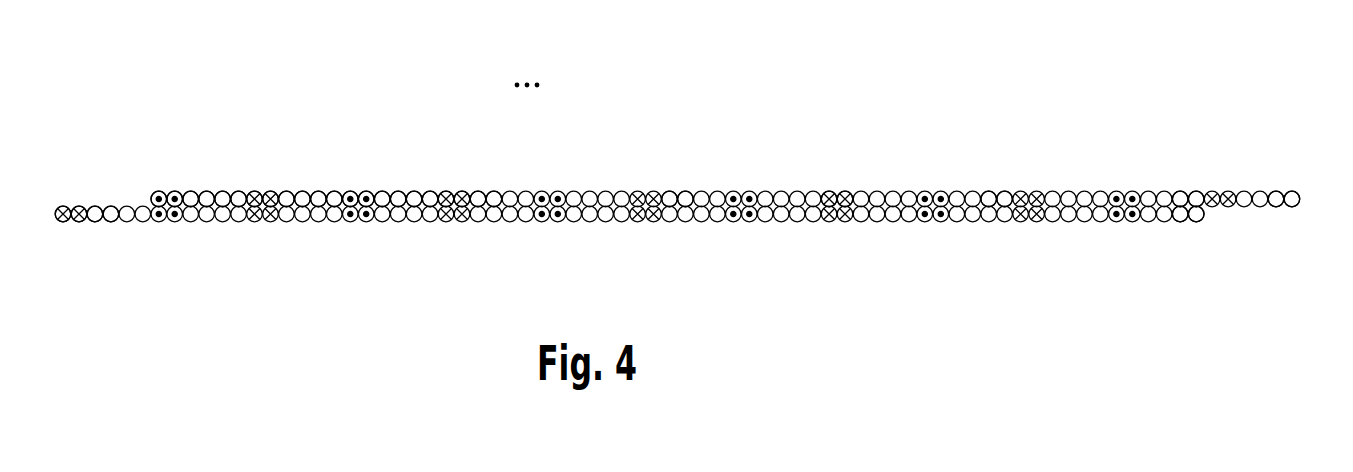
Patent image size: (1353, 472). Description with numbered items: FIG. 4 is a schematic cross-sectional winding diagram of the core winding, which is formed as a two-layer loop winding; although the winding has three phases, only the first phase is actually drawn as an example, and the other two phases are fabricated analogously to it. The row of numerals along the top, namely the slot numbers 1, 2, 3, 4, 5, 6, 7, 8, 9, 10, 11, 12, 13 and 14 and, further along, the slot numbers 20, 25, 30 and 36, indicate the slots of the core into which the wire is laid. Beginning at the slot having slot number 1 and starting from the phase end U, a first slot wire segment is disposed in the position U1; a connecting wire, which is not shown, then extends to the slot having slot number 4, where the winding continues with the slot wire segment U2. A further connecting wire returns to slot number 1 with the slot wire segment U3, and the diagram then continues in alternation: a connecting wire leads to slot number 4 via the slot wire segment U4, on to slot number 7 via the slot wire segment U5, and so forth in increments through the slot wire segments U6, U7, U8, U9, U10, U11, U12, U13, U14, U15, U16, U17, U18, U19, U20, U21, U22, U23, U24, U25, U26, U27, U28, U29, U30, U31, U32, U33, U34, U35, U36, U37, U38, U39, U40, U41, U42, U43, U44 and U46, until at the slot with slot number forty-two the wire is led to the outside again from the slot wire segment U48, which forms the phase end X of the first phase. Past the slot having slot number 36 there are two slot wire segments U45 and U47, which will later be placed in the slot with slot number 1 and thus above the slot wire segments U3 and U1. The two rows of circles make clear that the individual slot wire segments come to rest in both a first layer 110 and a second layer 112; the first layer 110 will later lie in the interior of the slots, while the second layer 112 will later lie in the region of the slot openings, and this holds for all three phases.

The slot number 3 is at (700, 146).
The first layer 110 is at (1327, 205).
The second layer 112 is at (1327, 205).
The slot number 1 is at (71, 146).
The slot number 2 is at (103, 146).
The slot number 4 is at (167, 138).
The slot number 5 is at (199, 138).
The slot number 6 is at (231, 138).
The slot number 7 is at (263, 138).
The slot number 8 is at (295, 138).
The slot number 9 is at (327, 138).
The slot number 10 is at (359, 138).
The slot number 11 is at (390, 138).
The slot number 12 is at (422, 138).
The slot number 13 is at (454, 138).
The slot number 14 is at (487, 138).
The slot number 20 is at (678, 138).
The slot number 25 is at (834, 138).
The slot number 30 is at (996, 138).
The slot number 36 is at (1188, 138).
The slot wire segment U1 is at (80, 222).
The slot wire segment U2 is at (157, 191).
The slot wire segment U3 is at (64, 222).
The slot wire segment U4 is at (173, 191).
The slot wire segment U5 is at (252, 191).
The slot wire segment U6 is at (176, 222).
The slot wire segment U7 is at (268, 191).
The slot wire segment U8 is at (160, 222).
The slot wire segment U9 is at (272, 222).
The slot wire segment U10 is at (348, 191).
The slot wire segment U11 is at (256, 222).
The slot wire segment U12 is at (364, 191).
The slot wire segment U13 is at (444, 191).
The slot wire segment U14 is at (367, 222).
The slot wire segment U15 is at (460, 191).
The slot wire segment U16 is at (351, 222).
The slot wire segment U17 is at (463, 222).
The slot wire segment U18 is at (540, 191).
The slot wire segment U19 is at (447, 222).
The slot wire segment U20 is at (556, 191).
The slot wire segment U21 is at (636, 191).
The slot wire segment U22 is at (559, 222).
The slot wire segment U23 is at (652, 191).
The slot wire segment U24 is at (543, 222).
The slot wire segment U25 is at (654, 222).
The slot wire segment U26 is at (731, 191).
The slot wire segment U27 is at (639, 222).
The slot wire segment U28 is at (747, 191).
The slot wire segment U29 is at (827, 191).
The slot wire segment U30 is at (750, 222).
The slot wire segment U31 is at (843, 191).
The slot wire segment U32 is at (734, 222).
The slot wire segment U33 is at (846, 222).
The slot wire segment U34 is at (923, 191).
The slot wire segment U35 is at (830, 222).
The slot wire segment U36 is at (939, 191).
The slot wire segment U37 is at (1019, 191).
The slot wire segment U38 is at (942, 222).
The slot wire segment U39 is at (1035, 191).
The slot wire segment U40 is at (926, 222).
The slot wire segment U41 is at (1038, 222).
The slot wire segment U42 is at (1114, 191).
The slot wire segment U43 is at (1022, 222).
The slot wire segment U44 is at (1130, 191).
The slot wire segment U45 is at (1210, 191).
The slot wire segment U46 is at (1133, 222).
The slot wire segment U47 is at (1226, 191).
The slot wire segment U48 is at (1117, 222).